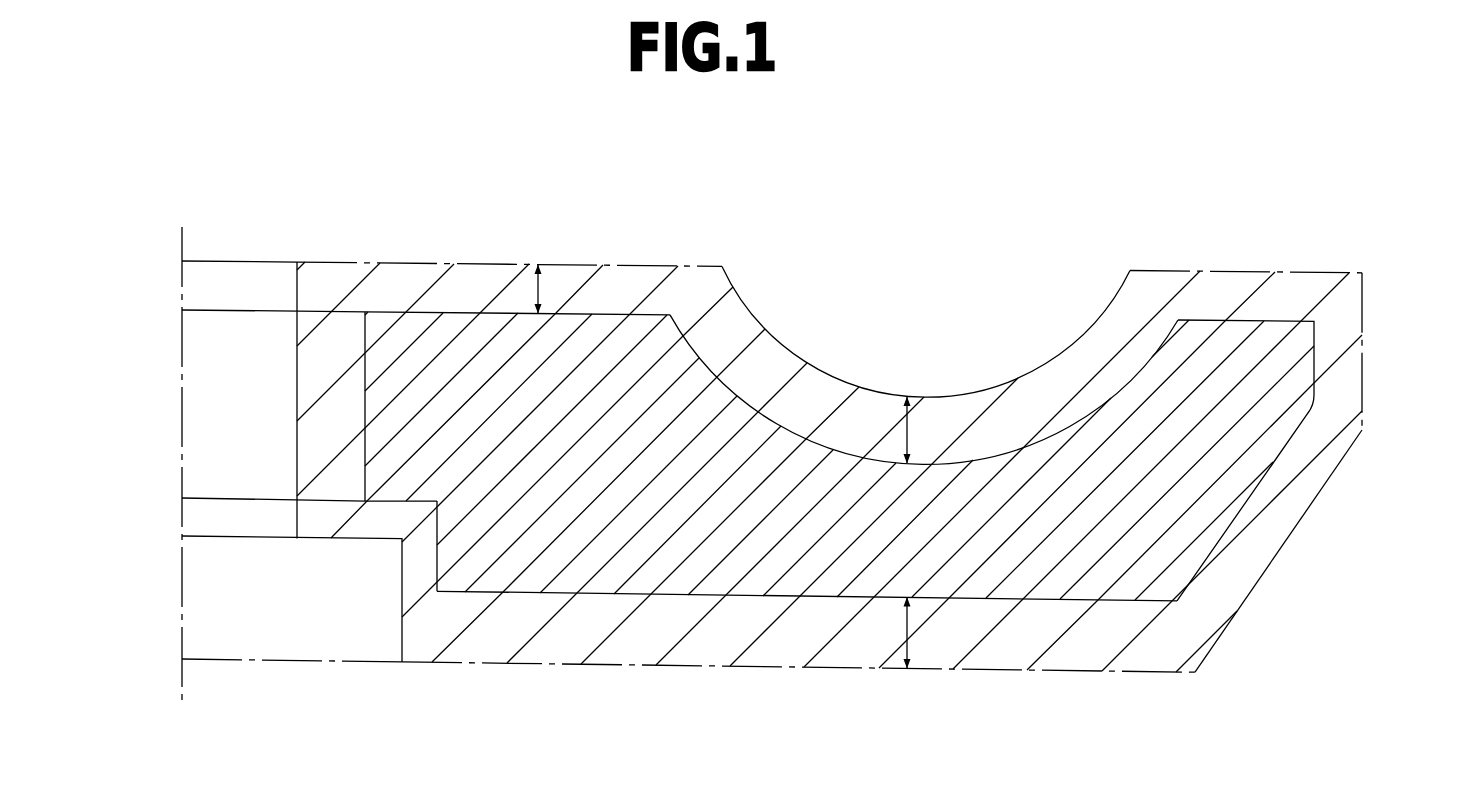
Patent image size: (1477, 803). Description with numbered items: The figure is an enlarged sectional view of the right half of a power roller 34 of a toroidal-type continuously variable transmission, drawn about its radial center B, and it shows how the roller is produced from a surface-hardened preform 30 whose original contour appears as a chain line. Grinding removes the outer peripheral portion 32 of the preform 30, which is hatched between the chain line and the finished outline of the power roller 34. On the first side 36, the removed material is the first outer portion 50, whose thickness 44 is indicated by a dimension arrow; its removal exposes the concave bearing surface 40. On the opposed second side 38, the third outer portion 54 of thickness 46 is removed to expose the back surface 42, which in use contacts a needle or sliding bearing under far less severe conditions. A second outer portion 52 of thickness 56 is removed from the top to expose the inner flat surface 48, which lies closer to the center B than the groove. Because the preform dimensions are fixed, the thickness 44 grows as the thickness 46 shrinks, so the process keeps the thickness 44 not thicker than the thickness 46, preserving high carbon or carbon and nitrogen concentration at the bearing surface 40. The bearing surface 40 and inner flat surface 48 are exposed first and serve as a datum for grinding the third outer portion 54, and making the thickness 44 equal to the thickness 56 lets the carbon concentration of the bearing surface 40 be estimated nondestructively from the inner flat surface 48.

The center B is at (183, 243).
The surface-hardened preform 30 is at (1243, 272).
The outer peripheral portion 32 is at (1310, 293).
The power roller 34 is at (1297, 355).
The first side 36 is at (807, 253).
The second side 38 is at (713, 682).
The bearing surface 40 is at (803, 427).
The back surface 42 is at (810, 598).
The thickness of the outer peripheral portion on the first side 44 is at (913, 432).
The thickness of the outer peripheral portion on the second side 46 is at (913, 627).
The inner flat surface 48 is at (612, 312).
The first outer portion 50 is at (1020, 413).
The second outer portion 52 is at (488, 282).
The third outer portion 54 is at (993, 647).
The thickness of the second outer portion 56 is at (565, 265).